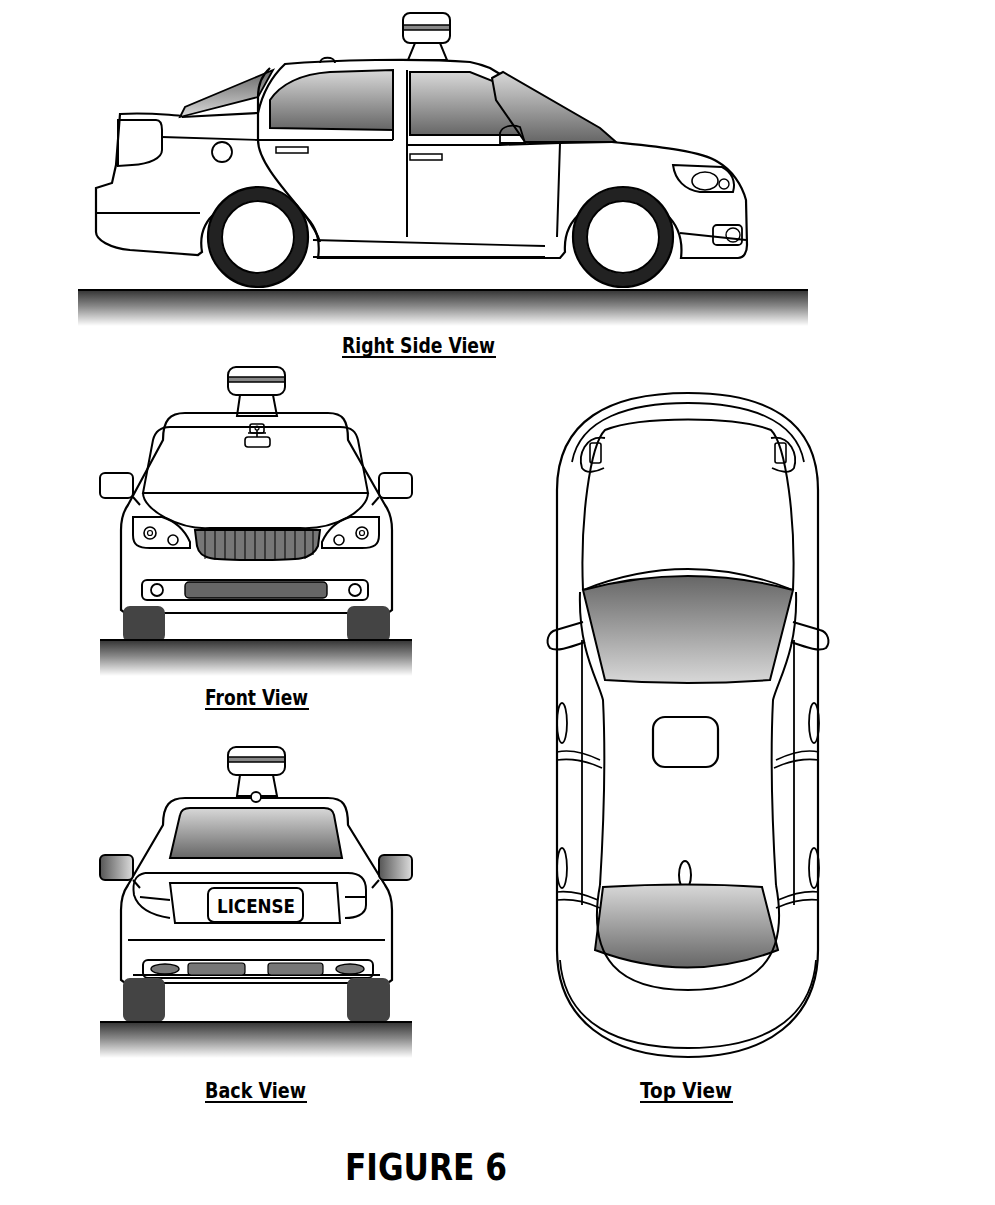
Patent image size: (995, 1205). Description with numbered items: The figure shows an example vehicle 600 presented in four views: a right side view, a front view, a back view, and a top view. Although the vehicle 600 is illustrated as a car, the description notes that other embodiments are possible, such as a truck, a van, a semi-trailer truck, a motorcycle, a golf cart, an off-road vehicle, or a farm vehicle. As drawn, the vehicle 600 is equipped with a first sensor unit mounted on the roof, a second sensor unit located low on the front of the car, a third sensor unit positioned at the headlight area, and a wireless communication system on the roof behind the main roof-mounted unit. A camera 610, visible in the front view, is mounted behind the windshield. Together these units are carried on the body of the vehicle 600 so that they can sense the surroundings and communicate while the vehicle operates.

The vehicle 600 is at (430, 169).
The camera 610 is at (268, 432).